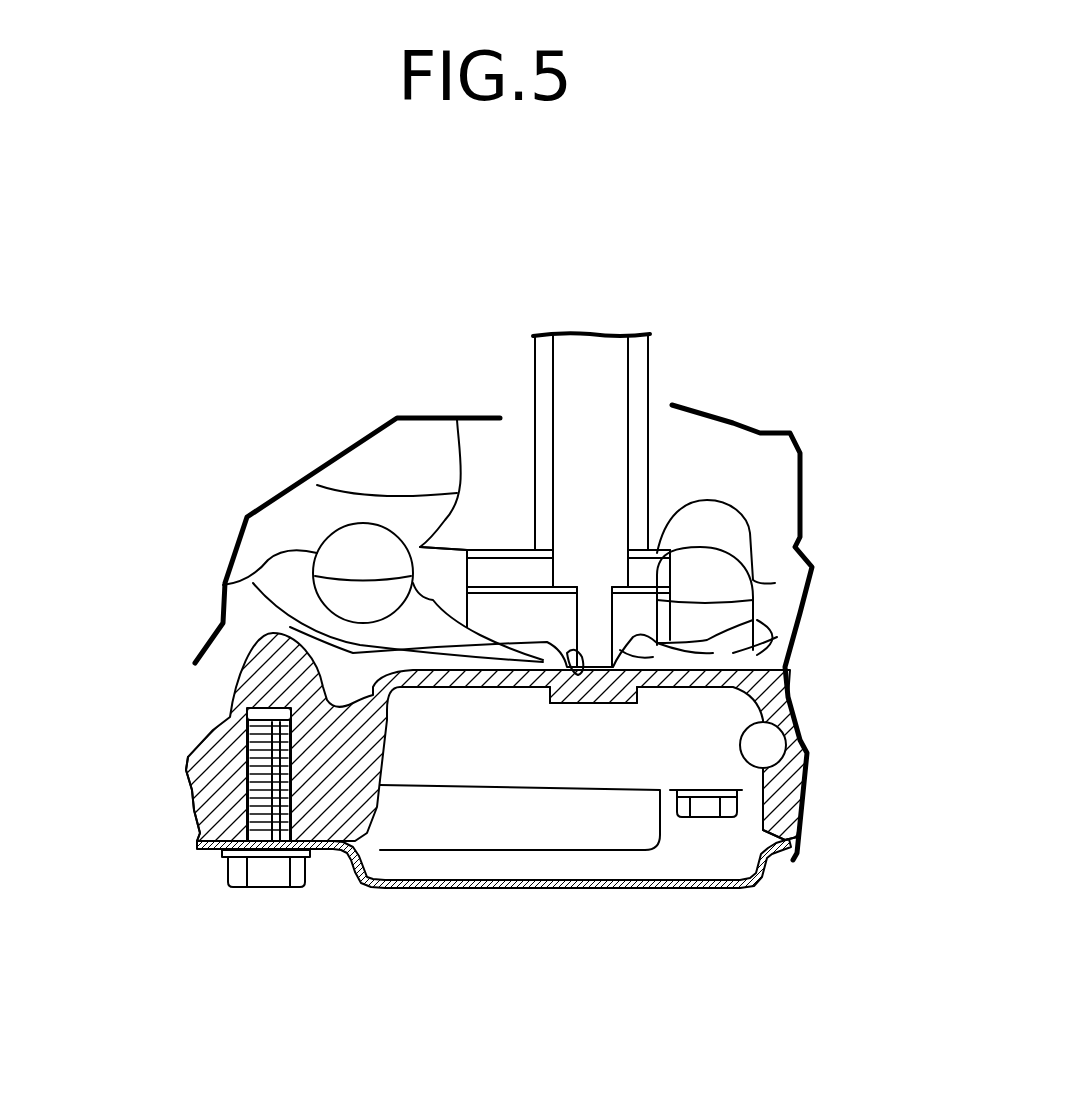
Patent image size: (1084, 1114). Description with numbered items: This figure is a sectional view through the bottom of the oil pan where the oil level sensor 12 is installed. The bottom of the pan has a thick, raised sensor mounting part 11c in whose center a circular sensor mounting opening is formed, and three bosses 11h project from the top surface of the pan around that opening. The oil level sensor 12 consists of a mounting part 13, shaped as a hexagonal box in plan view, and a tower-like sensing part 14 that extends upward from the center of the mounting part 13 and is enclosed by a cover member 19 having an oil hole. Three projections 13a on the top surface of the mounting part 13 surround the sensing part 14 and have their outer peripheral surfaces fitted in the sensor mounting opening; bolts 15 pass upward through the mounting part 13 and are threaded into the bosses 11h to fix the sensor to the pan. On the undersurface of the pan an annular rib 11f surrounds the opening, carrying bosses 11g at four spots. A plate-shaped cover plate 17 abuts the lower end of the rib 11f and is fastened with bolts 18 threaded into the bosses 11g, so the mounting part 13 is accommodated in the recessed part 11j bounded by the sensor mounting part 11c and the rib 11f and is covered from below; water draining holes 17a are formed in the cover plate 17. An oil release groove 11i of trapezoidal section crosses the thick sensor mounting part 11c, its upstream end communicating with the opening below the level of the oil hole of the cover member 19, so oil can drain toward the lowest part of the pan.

The sensor mounting part 11c is at (718, 655).
The annular rib 11f is at (780, 803).
The bosses of the rib 11g is at (203, 810).
The bosses on top surface of oil pan 11h is at (370, 537).
The oil release groove 11i is at (556, 688).
The recessed part 11j is at (783, 713).
The oil level sensor 12 is at (677, 455).
The mounting part 13 is at (577, 853).
The projections 13a is at (523, 607).
The sensing part 14 is at (648, 367).
The bolts 15 is at (700, 817).
The cover plate 17 is at (635, 890).
The water draining holes 17a is at (457, 882).
The bolts 18 is at (267, 873).
The cover member 19 is at (581, 357).